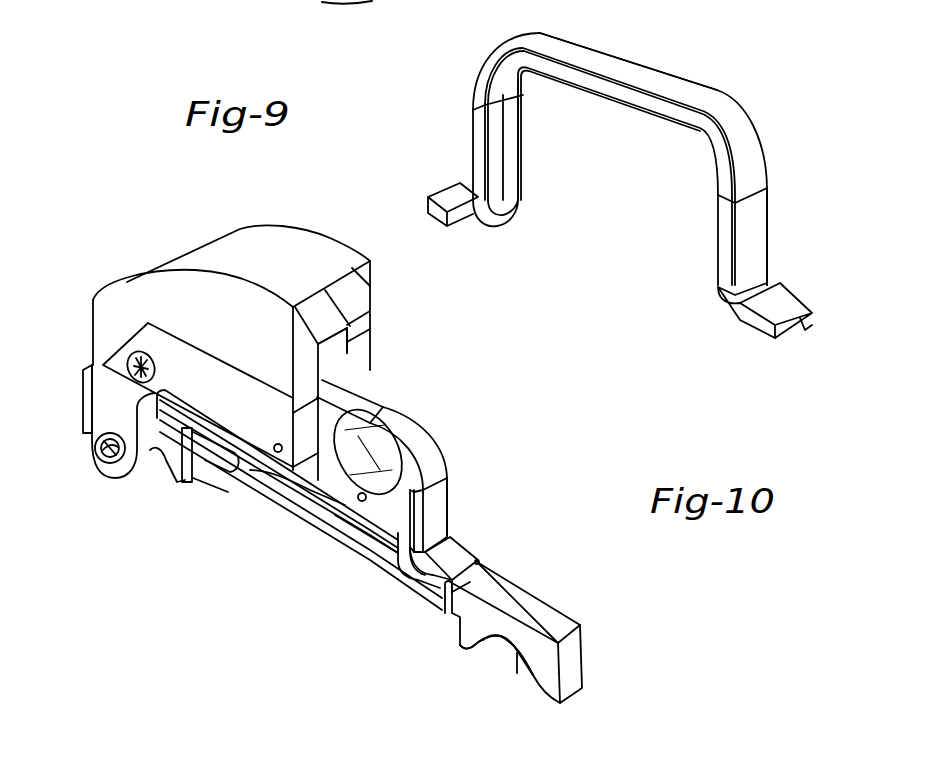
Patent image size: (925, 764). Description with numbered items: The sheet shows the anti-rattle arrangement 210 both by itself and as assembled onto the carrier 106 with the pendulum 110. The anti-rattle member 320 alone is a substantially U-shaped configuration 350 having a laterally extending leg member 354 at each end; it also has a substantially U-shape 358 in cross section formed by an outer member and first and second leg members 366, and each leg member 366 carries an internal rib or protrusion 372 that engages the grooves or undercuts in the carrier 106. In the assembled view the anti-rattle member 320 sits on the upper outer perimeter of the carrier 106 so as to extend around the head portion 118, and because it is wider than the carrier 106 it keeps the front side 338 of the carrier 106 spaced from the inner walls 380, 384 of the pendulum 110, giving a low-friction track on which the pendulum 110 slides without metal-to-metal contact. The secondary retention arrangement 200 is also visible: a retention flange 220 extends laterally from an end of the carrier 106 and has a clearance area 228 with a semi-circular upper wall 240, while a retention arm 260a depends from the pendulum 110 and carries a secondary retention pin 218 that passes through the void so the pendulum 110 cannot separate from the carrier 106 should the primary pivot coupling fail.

In FIG. 9, the pendulum 110 is at (280, 223).
In FIG. 9, the inner wall 384 is at (343, 350).
In FIG. 9, the retention arm 260a is at (110, 400).
In FIG. 9, the secondary retention arrangement 200 is at (80, 437).
In FIG. 9, the secondary retention pin 218 is at (110, 450).
In FIG. 9, the carrier 106 is at (267, 497).
In FIG. 9, the head portion 118 is at (332, 492).
In FIG. 9, the inner wall 380 is at (342, 493).
In FIG. 9, the front side 338 is at (362, 513).
In FIG. 9, the anti-rattle arrangement 210 is at (425, 396).
In FIG. 10, the anti-rattle arrangement 210 is at (730, 82).
In FIG. 9, the U-shape 358 is at (440, 458).
In FIG. 10, the U-shape 358 is at (743, 138).
In FIG. 9, the leg member 366 is at (408, 525).
In FIG. 10, the leg member 366 is at (477, 117).
In FIG. 9, the leg member 354 is at (458, 557).
In FIG. 10, the leg member 354 is at (447, 212).
In FIG. 9, the retention flange 220 is at (538, 613).
In FIG. 9, the upper wall 240 is at (543, 668).
In FIG. 9, the clearance area 228 is at (490, 655).
In FIG. 10, the anti-rattle member 320 is at (672, 72).
In FIG. 10, the U-shaped configuration 350 is at (470, 137).
In FIG. 10, the internal rib 372 is at (517, 187).